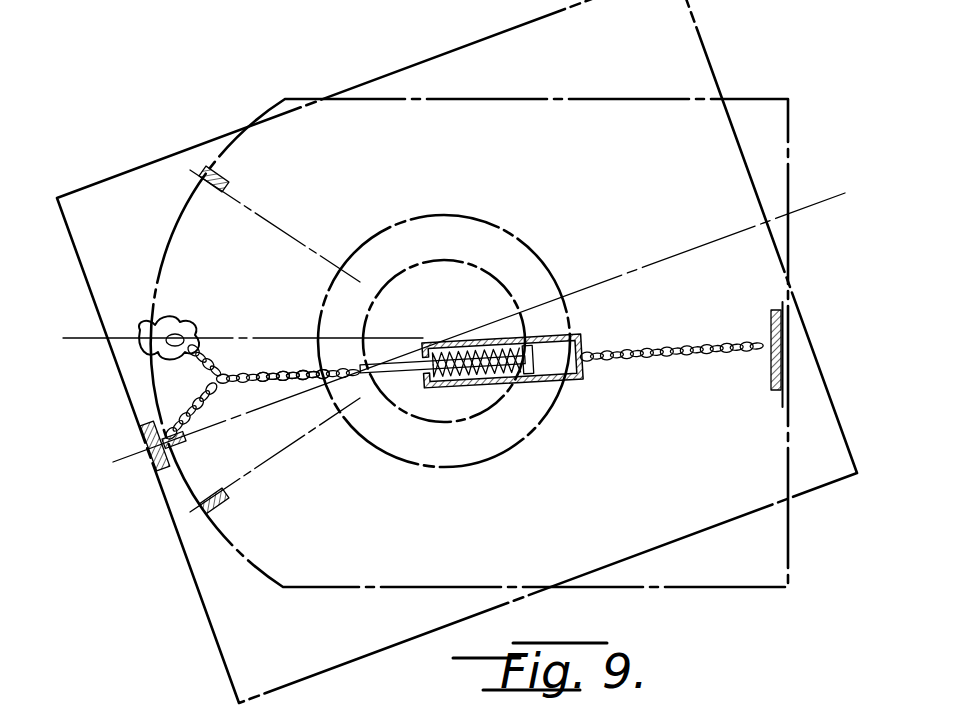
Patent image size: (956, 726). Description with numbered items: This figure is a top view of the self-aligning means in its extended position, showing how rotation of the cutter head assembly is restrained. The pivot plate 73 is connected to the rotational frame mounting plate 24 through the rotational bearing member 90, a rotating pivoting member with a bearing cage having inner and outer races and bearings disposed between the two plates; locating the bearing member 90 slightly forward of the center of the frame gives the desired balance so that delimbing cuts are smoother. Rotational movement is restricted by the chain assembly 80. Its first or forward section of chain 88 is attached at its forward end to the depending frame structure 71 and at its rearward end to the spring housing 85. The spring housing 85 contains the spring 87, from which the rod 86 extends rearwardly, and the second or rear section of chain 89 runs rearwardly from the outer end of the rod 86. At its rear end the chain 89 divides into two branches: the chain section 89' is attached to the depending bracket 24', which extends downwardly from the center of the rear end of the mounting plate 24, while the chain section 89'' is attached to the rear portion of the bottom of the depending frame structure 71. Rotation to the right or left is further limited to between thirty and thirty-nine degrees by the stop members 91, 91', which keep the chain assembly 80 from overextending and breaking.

The rotational frame mounting plate 24 is at (457, 351).
The depending bracket 24' is at (109, 446).
The depending frame structure 71 is at (142, 354).
The pivot plate 73 is at (160, 272).
The chain assembly 80 is at (298, 363).
The spring housing 85 is at (486, 335).
The rod 86 is at (403, 373).
The spring 87 is at (478, 376).
The forward section of chain 88 is at (636, 362).
The rear section of chain 89 is at (287, 415).
The chain section 89' is at (216, 428).
The chain section 89'' is at (227, 332).
The rotational bearing member 90 is at (447, 212).
The stop member 91 is at (254, 174).
The stop member 91' is at (251, 523).